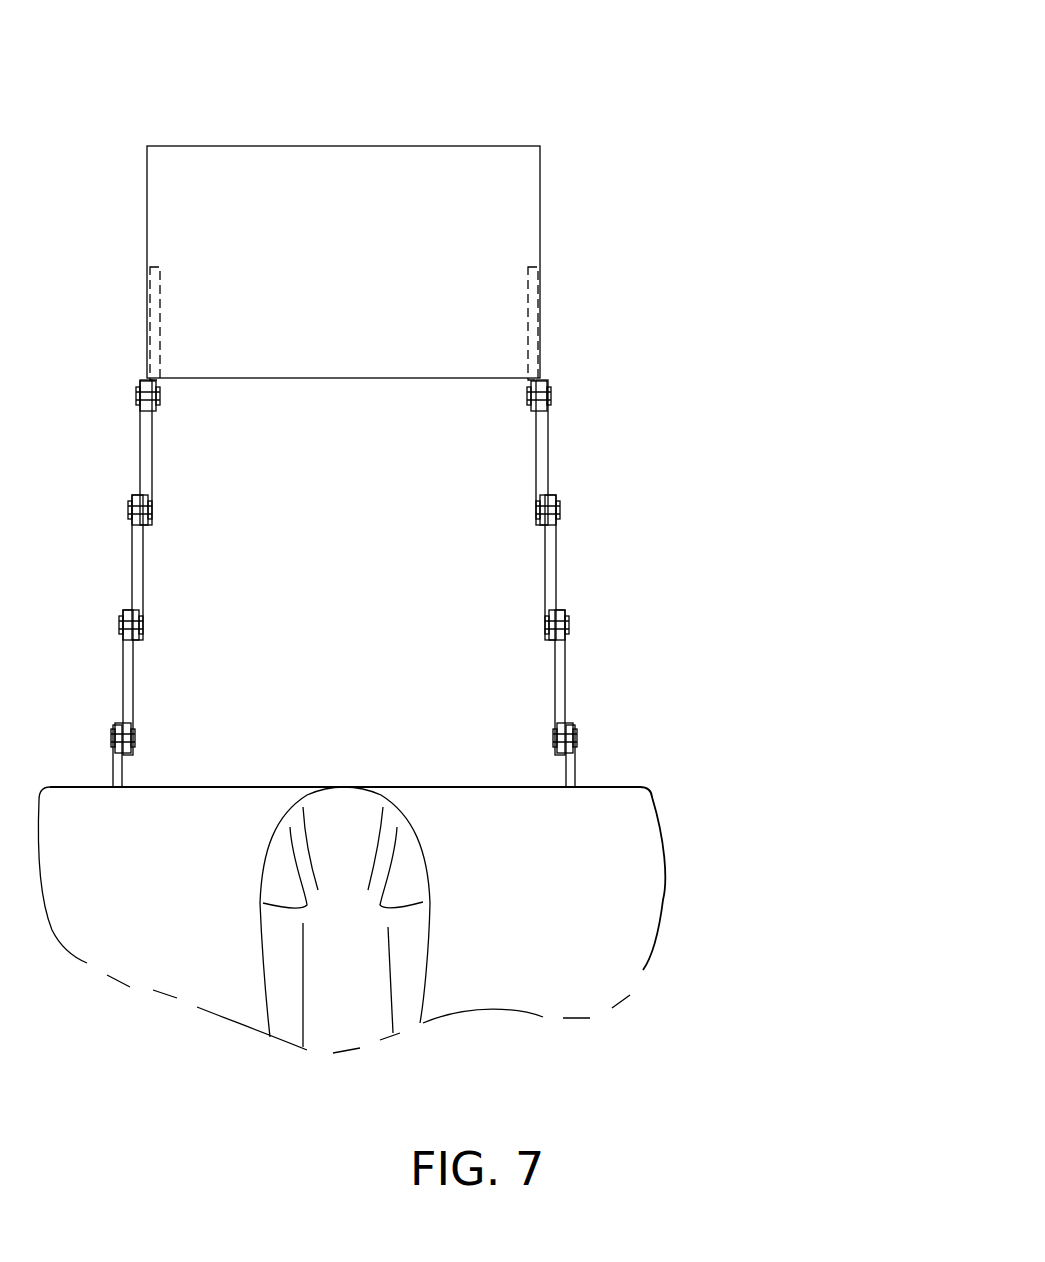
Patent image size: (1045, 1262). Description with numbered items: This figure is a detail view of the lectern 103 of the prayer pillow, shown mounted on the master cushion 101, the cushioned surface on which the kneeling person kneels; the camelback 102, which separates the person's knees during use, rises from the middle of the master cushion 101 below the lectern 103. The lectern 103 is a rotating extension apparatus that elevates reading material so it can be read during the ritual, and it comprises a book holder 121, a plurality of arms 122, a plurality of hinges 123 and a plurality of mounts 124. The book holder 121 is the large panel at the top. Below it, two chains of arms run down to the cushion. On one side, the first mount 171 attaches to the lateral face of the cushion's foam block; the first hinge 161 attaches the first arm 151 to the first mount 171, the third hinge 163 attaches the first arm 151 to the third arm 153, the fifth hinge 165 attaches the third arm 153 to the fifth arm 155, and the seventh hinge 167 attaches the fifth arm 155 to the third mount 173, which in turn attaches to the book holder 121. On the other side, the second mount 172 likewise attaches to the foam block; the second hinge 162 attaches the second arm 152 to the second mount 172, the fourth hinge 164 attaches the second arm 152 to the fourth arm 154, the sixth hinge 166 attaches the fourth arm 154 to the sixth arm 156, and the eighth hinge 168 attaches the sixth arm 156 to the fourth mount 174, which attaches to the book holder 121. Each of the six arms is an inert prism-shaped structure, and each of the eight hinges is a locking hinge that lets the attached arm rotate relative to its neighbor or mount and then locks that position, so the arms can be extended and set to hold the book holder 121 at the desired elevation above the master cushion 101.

The master cushion 101 is at (602, 787).
The camelback 102 is at (393, 948).
The lectern 103 is at (136, 98).
The book holder 121 is at (541, 235).
The plurality of arms 122 is at (535, 477).
The plurality of hinges 123 is at (489, 557).
The plurality of mounts 124 is at (448, 527).
The first arm 151 is at (566, 667).
The second arm 152 is at (134, 680).
The third arm 153 is at (557, 552).
The fourth arm 154 is at (144, 565).
The fifth arm 155 is at (549, 437).
The sixth arm 156 is at (153, 443).
The first hinge 161 is at (578, 740).
The second hinge 162 is at (136, 741).
The third hinge 163 is at (570, 620).
The fourth hinge 164 is at (144, 622).
The fifth hinge 165 is at (561, 508).
The sixth hinge 166 is at (153, 510).
The seventh hinge 167 is at (552, 397).
The eighth hinge 168 is at (136, 398).
The first mount 171 is at (567, 723).
The second mount 172 is at (113, 735).
The third mount 173 is at (530, 334).
The fourth mount 174 is at (158, 304).